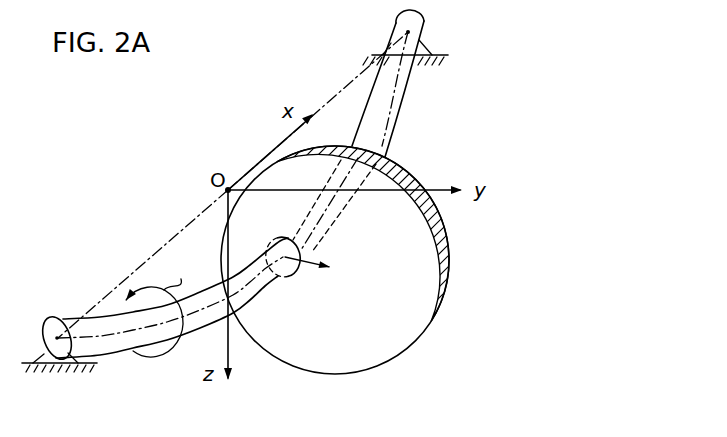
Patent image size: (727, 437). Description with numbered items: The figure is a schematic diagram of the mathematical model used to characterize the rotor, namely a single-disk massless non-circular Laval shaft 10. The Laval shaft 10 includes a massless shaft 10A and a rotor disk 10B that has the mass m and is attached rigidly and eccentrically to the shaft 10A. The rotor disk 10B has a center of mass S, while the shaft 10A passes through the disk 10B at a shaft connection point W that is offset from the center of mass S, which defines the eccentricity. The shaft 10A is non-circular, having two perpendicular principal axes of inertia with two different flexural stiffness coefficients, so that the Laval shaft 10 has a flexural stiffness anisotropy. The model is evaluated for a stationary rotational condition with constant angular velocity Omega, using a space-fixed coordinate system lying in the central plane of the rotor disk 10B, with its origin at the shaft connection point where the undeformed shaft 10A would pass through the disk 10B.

The Laval shaft 10 is at (164, 230).
The massless shaft 10A is at (110, 357).
The rotor disk 10B is at (275, 362).